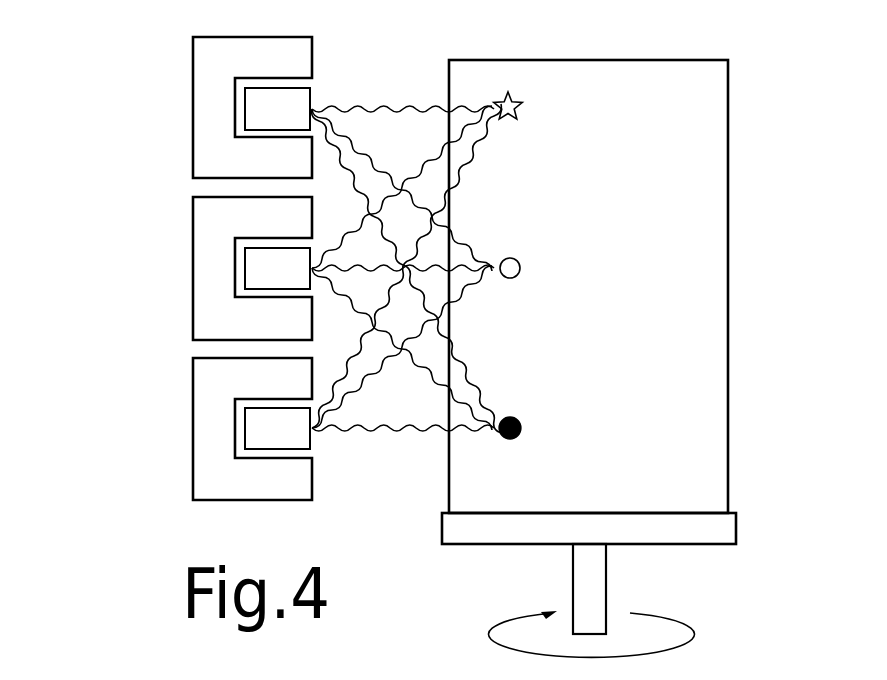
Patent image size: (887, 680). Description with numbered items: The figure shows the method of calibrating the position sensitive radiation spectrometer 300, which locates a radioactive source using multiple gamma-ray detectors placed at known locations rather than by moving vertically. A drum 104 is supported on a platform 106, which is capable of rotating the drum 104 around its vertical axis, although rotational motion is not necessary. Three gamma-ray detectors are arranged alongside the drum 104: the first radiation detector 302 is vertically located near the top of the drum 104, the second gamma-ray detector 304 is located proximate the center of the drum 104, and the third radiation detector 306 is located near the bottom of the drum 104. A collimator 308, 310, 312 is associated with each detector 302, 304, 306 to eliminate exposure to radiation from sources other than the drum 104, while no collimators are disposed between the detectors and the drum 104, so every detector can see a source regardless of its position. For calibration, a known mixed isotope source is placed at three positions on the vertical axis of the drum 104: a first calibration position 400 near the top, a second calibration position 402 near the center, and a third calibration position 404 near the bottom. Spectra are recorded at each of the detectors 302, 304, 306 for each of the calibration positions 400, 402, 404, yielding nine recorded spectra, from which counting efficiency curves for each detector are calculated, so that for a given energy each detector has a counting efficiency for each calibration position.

The drum 104 is at (728, 105).
The platform 106 is at (736, 525).
The position sensitive radiation spectrometer 300 is at (110, 354).
The first radiation detector 302 is at (277, 109).
The second gamma-ray detector 304 is at (277, 268).
The third radiation detector 306 is at (277, 428).
The collimator 308 is at (193, 98).
The collimator 310 is at (193, 258).
The collimator 312 is at (193, 423).
The first calibration position 400 is at (506, 93).
The second calibration position 402 is at (506, 258).
The third calibration position 404 is at (508, 417).